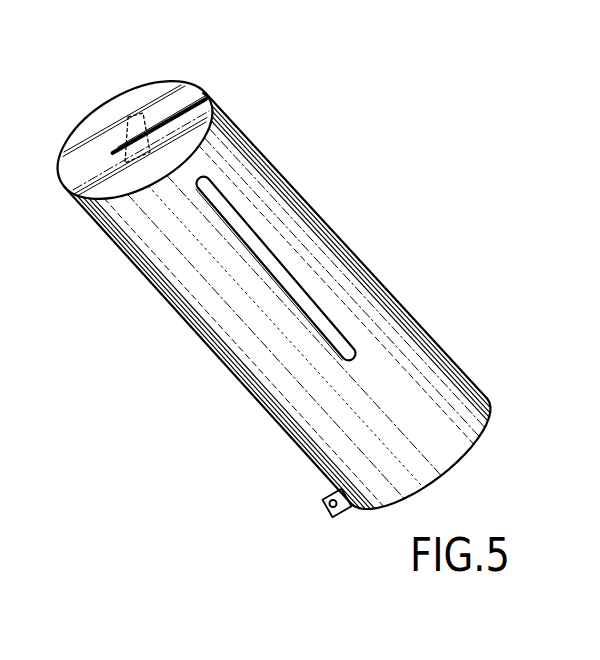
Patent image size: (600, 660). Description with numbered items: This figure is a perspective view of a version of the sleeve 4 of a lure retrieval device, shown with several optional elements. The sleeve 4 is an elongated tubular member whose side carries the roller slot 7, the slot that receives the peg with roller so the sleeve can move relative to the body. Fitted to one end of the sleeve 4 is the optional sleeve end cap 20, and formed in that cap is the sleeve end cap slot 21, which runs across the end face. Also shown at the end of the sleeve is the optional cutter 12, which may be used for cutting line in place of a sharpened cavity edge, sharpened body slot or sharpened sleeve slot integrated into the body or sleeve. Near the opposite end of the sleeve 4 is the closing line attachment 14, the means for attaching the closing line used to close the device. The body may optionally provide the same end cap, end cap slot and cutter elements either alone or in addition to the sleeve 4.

The sleeve 4 is at (432, 340).
The roller slot 7 is at (272, 258).
The cutter 12 is at (124, 124).
The closing line attachment 14 is at (323, 517).
The sleeve end cap 20 is at (183, 88).
The sleeve end cap slot 21 is at (202, 89).